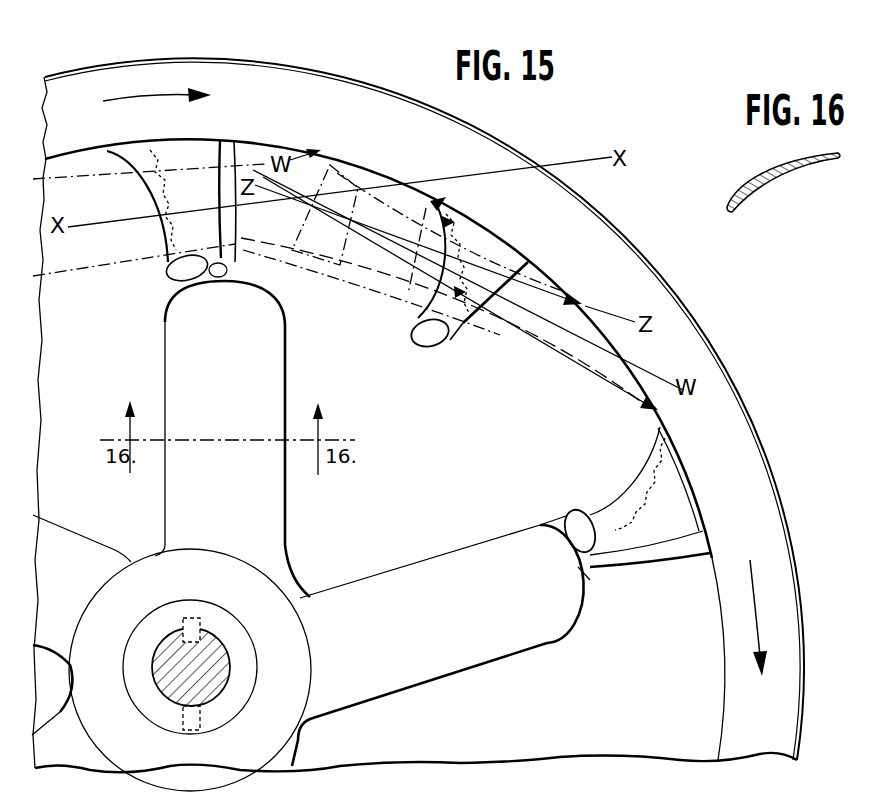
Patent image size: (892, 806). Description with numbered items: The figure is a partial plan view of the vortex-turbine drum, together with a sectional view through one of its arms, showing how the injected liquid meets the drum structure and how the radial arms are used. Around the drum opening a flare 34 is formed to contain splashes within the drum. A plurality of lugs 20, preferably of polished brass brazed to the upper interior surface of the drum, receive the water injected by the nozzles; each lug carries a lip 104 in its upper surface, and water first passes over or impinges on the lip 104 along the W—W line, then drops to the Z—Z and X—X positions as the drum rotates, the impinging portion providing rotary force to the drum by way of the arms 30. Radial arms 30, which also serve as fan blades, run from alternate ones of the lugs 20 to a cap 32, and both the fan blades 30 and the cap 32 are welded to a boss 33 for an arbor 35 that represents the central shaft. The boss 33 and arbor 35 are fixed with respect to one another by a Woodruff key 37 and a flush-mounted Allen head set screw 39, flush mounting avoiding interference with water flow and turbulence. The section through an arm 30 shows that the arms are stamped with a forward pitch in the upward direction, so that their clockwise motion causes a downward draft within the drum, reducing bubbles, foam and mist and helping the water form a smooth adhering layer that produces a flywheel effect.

In FIG. 15, the flare 34 is at (218, 62).
In FIG. 15, the radial arms 30 is at (268, 368).
In FIG. 16, the radial arms 30 is at (780, 180).
In FIG. 15, the cap 32 is at (88, 612).
In FIG. 15, the boss 33 is at (150, 618).
In FIG. 15, the arbor 35 is at (160, 683).
In FIG. 15, the Woodruff key 37 is at (200, 620).
In FIG. 15, the set screw 39 is at (203, 730).
In FIG. 15, the lugs 20 is at (233, 240).
In FIG. 15, the lip 104 is at (170, 240).